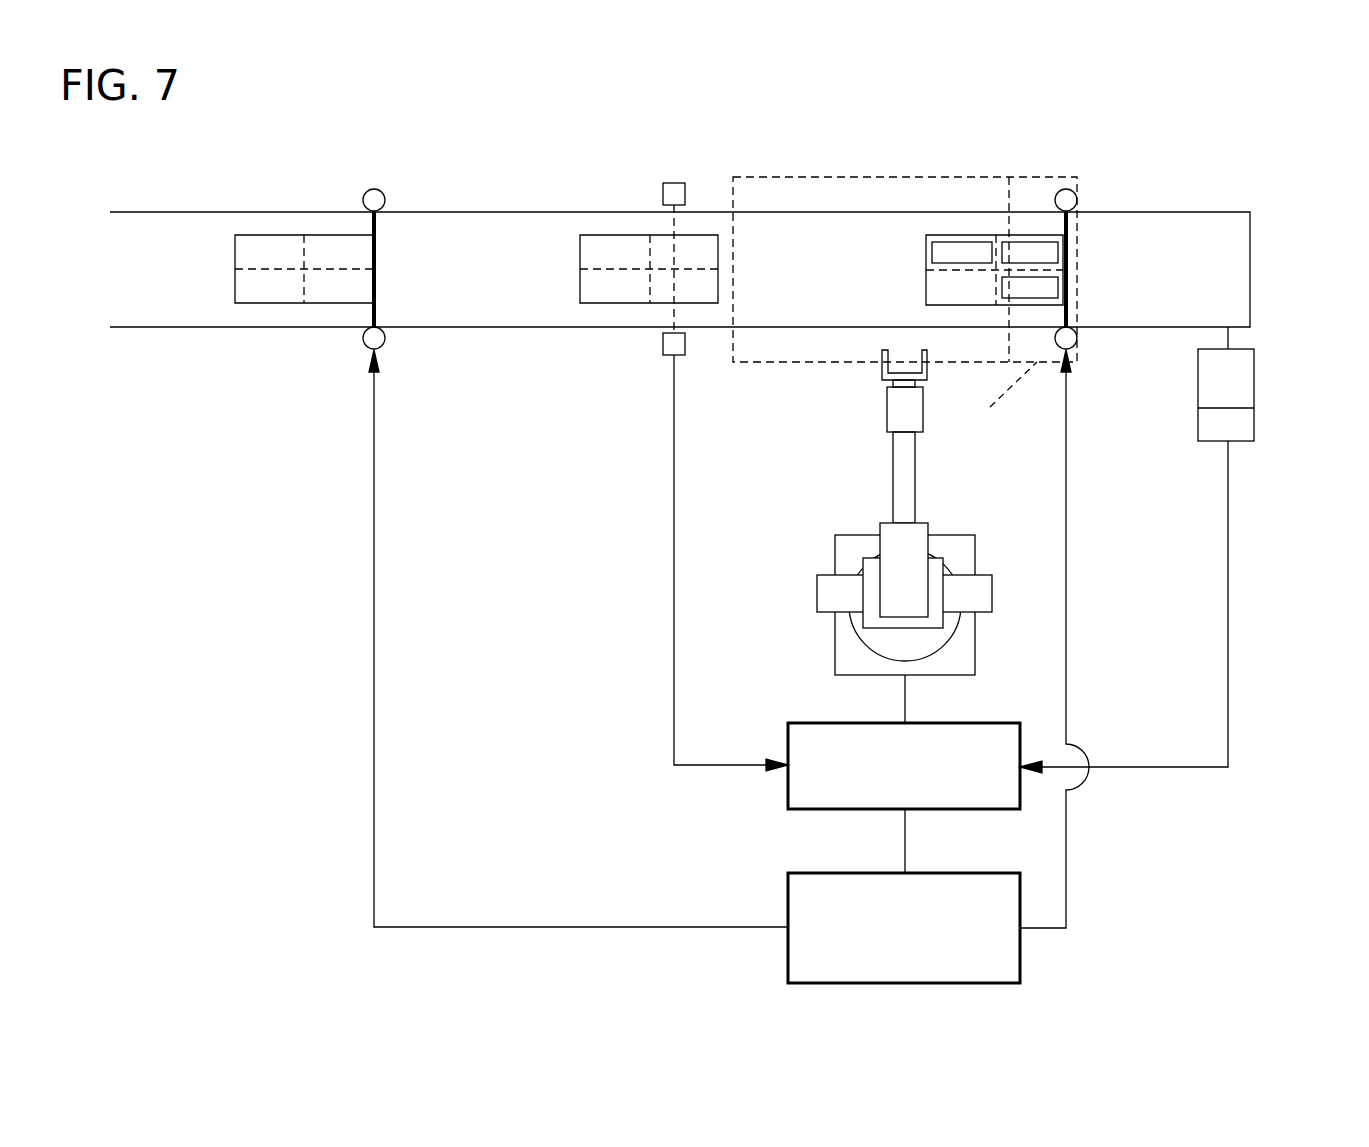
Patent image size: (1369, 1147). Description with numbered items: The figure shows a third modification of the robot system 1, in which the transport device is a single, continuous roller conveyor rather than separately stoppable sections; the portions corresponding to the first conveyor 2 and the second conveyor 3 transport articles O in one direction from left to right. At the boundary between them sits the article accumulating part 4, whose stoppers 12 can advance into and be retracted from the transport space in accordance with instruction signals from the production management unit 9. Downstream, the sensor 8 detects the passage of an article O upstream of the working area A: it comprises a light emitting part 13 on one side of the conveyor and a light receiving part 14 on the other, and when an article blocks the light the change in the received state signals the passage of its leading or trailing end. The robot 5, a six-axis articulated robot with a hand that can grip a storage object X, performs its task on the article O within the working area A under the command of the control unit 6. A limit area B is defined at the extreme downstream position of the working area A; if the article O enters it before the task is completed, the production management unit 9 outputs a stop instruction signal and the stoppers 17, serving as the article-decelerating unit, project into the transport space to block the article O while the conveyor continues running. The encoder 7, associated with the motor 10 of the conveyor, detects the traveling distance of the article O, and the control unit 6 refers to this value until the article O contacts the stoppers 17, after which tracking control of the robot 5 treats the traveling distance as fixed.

The robot system 1 is at (1270, 186).
The first conveyor 2 is at (268, 212).
The second conveyor 3 is at (540, 212).
The article accumulating part 4 is at (574, 501).
The robot 5 is at (825, 535).
The control unit 6 is at (990, 723).
The encoder 7 is at (1215, 443).
The sensor 8 is at (677, 422).
The production management unit 9 is at (1020, 950).
The motor 10 is at (1255, 380).
The stoppers 12 is at (378, 227).
The light emitting part 13 is at (685, 195).
The light receiving part 14 is at (663, 348).
The stoppers 17 is at (1070, 227).
The article O is at (325, 235).
The storage object X is at (957, 242).
The working area A is at (866, 177).
The limit area B is at (1035, 177).